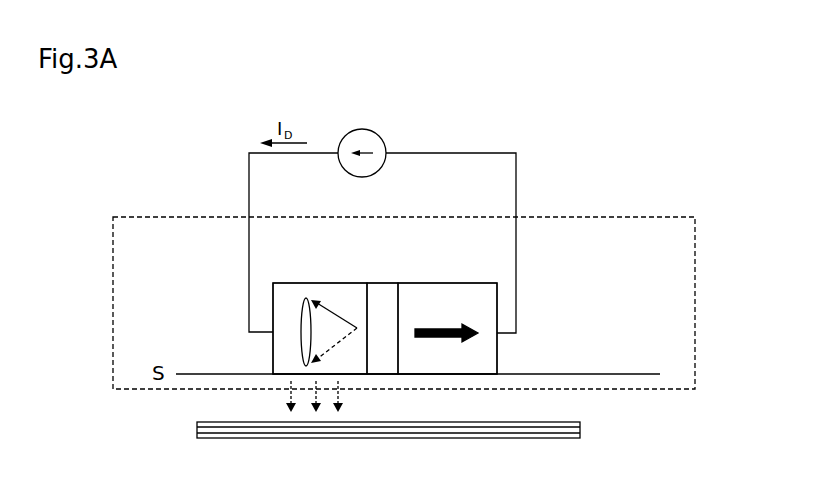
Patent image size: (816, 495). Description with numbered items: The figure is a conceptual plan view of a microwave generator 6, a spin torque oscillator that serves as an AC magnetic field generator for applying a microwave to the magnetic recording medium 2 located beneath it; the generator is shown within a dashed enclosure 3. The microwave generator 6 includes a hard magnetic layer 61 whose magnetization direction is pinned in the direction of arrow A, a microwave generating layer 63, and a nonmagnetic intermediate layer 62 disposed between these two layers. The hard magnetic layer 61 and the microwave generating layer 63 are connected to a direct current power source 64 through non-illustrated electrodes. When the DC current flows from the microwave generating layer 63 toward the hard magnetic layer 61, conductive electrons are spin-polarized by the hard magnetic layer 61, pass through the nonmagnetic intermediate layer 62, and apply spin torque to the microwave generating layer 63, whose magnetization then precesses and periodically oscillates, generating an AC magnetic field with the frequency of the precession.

The magnetic recording medium 2 is at (581, 426).
The light source unit 3 is at (698, 240).
The microwave generator 6 is at (538, 312).
The hard magnetic layer 61 is at (441, 282).
The nonmagnetic intermediate layer 62 is at (386, 282).
The microwave generating layer 63 is at (314, 282).
The direct current (DC) power source 64 is at (364, 129).